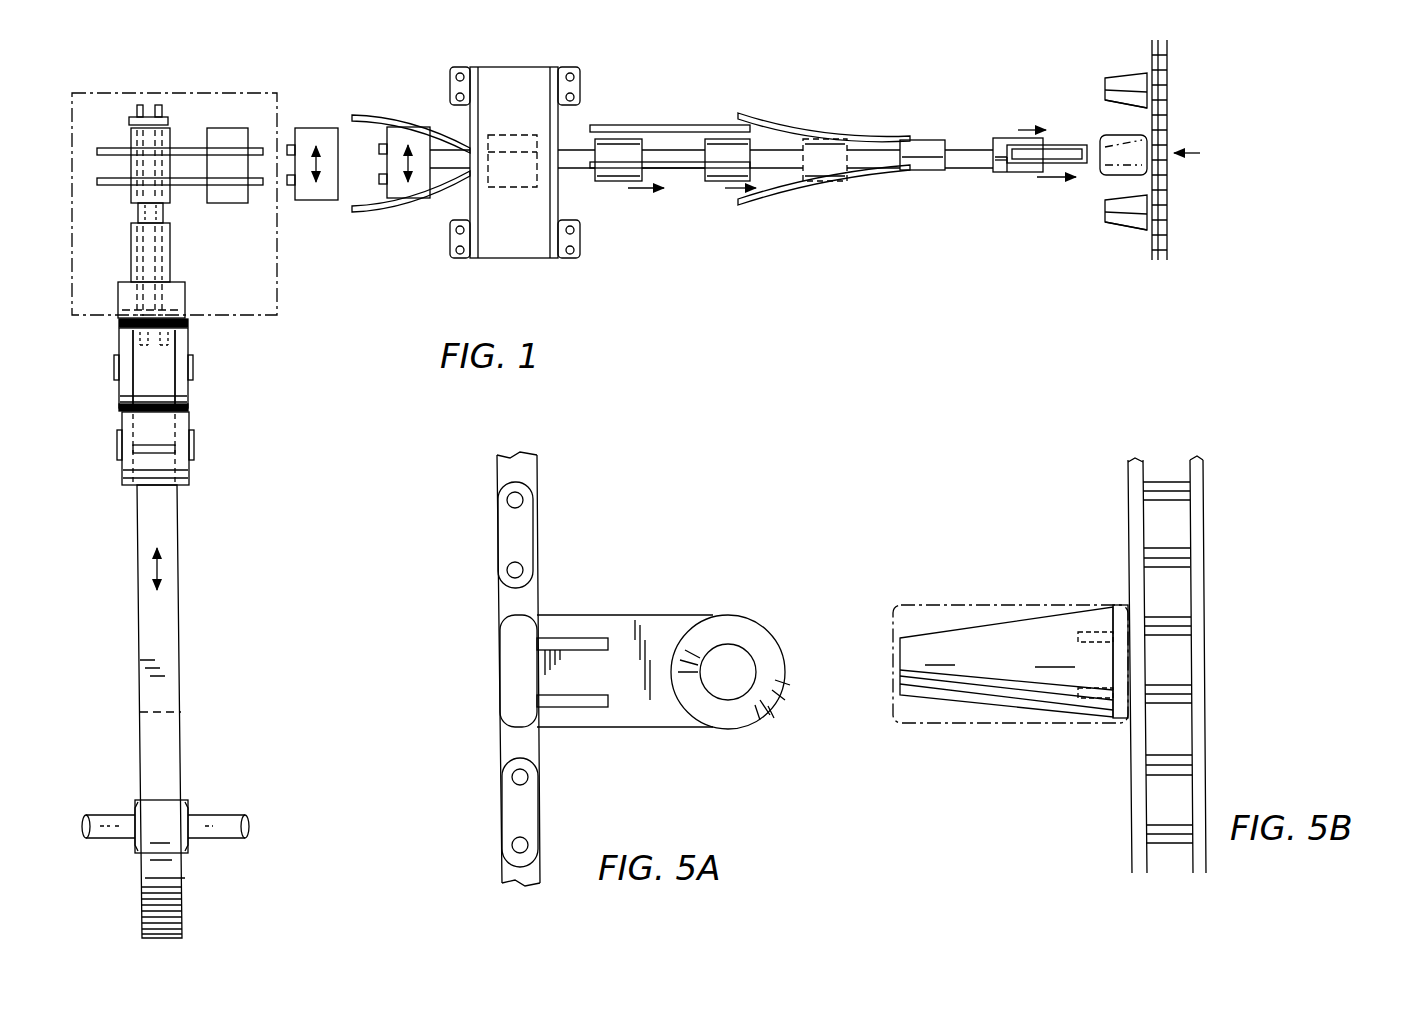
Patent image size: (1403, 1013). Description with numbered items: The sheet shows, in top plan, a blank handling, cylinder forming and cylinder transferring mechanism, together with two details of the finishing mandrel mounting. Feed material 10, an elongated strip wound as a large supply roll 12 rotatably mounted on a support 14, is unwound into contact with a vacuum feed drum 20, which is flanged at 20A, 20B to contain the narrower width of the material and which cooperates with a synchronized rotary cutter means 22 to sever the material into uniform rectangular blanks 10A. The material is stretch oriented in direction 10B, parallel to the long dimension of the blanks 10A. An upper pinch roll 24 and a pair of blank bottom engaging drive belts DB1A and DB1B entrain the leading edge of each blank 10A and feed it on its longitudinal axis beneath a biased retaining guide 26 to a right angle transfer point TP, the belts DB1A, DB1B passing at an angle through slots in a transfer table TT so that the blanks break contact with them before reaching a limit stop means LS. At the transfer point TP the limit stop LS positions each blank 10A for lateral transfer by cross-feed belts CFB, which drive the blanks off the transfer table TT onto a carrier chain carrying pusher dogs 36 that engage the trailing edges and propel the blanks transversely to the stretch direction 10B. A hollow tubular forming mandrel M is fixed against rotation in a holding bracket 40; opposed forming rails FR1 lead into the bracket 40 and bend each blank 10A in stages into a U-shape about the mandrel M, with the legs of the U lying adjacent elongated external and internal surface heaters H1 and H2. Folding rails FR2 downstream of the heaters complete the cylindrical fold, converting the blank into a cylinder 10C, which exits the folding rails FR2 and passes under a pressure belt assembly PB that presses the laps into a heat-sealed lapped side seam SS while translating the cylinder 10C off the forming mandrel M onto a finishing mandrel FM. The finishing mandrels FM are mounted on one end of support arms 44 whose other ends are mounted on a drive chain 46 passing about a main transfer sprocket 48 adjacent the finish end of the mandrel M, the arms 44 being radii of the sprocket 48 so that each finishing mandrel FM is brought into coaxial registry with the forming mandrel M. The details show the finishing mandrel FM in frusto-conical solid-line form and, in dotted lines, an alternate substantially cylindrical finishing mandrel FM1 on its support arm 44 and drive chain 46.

In FIG. 1, the feed material 10 is at (180, 685).
In FIG. 1, the rectangular blank 10A is at (170, 142).
In FIG. 1, the stretch orientation direction 10B is at (160, 572).
In FIG. 1, the cylinder 10C is at (922, 140).
In FIG. 1, the supply roll 12 is at (195, 790).
In FIG. 1, the support 14 is at (195, 840).
In FIG. 1, the vacuum feed drum 20 is at (196, 385).
In FIG. 1, the flange 20A is at (180, 340).
In FIG. 1, the flange 20B is at (128, 340).
In FIG. 1, the rotary cutter means 22 is at (190, 472).
In FIG. 1, the upper pinch roll 24 is at (180, 298).
In FIG. 1, the biased retaining guide 26 is at (131, 255).
In FIG. 1, the pusher dog 36 is at (291, 190).
In FIG. 1, the holding bracket 40 is at (505, 162).
In FIG. 1, the support arm 44 is at (1145, 232).
In FIG. 5A, the support arm 44 is at (645, 622).
In FIG. 5B, the support arm 44 is at (1120, 662).
In FIG. 1, the drive chain 46 is at (1170, 255).
In FIG. 5A, the drive chain 46 is at (537, 535).
In FIG. 5B, the drive chain 46 is at (1200, 520).
In FIG. 1, the main transfer sprocket 48 is at (1200, 153).
In FIG. 1, the limit stop means LS is at (132, 117).
In FIG. 1, the transfer point TP is at (118, 166).
In FIG. 1, the cross-feed belts CFB is at (185, 150).
In FIG. 1, the drive belt DB1A is at (163, 212).
In FIG. 1, the drive belt DB1B is at (138, 212).
In FIG. 1, the transfer table TT is at (285, 282).
In FIG. 1, the forming rails FR1 is at (360, 116).
In FIG. 1, the folding rails FR2 is at (775, 122).
In FIG. 1, the external surface heater H1 is at (658, 125).
In FIG. 1, the internal surface heater H2 is at (680, 162).
In FIG. 1, the forming mandrel M is at (572, 150).
In FIG. 1, the pressure belt assembly PB is at (1070, 150).
In FIG. 1, the side seam SS is at (1000, 172).
In FIG. 1, the finishing mandrel FM is at (1128, 85).
In FIG. 5A, the finishing mandrel FM is at (732, 632).
In FIG. 5B, the finishing mandrel FM is at (1006, 662).
In FIG. 5B, the cylindrical finishing mandrel FM1 is at (950, 603).